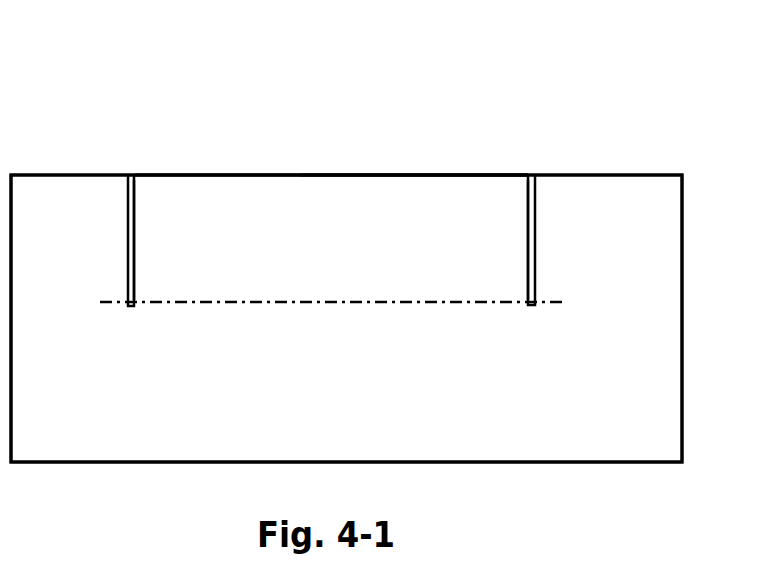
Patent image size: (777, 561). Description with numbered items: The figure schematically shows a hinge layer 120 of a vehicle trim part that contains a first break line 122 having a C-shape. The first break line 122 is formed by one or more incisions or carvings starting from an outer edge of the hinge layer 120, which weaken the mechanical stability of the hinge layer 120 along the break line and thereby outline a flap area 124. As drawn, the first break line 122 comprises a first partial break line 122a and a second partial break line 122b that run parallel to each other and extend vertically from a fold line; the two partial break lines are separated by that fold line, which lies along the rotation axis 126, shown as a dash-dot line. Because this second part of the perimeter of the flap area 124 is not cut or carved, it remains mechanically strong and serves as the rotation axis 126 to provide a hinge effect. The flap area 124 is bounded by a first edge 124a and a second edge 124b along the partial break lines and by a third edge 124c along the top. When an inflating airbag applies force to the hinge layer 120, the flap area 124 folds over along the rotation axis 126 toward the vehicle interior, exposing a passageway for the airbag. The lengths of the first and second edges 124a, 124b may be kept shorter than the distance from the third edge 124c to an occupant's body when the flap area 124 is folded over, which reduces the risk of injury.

The hinge layer 120 is at (150, 120).
The first break line 122 is at (534, 257).
The first partial break line 122a is at (131, 205).
The second partial break line 122b is at (536, 177).
The flap area 124 is at (365, 202).
The third edge 124c is at (450, 170).
The first edge 124a is at (137, 268).
The second edge 124b is at (526, 271).
The rotation axis 126 is at (398, 306).